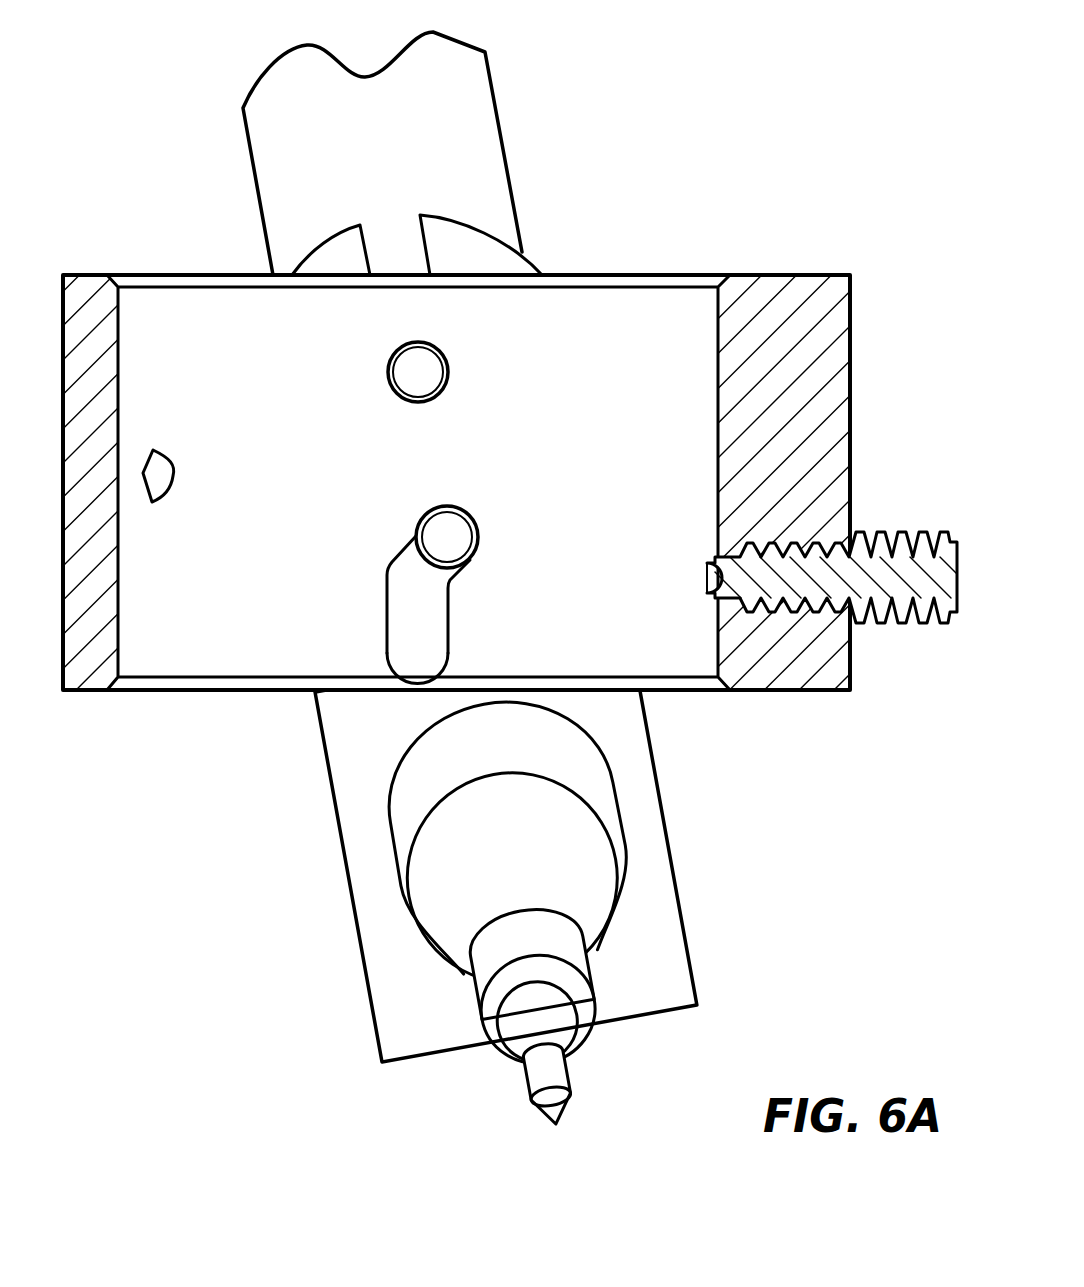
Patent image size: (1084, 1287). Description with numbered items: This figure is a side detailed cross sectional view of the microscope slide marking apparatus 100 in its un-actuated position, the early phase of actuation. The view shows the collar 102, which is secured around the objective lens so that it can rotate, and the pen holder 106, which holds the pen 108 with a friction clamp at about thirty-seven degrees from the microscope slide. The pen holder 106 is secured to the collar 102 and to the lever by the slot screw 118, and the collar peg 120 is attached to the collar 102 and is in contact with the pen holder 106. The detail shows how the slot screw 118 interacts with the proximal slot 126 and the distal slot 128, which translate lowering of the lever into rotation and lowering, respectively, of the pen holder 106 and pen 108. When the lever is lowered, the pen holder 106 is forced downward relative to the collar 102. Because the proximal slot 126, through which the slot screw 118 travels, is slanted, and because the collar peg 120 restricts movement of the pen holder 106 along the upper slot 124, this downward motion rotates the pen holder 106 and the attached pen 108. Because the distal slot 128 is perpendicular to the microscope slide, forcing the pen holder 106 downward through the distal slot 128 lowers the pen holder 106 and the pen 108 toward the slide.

The microscope slide marking apparatus 100 is at (510, 588).
The collar 102 is at (662, 275).
The pen holder 106 is at (653, 748).
The pen 108 is at (618, 835).
The slot screw 118 is at (415, 547).
The collar peg 120 is at (440, 340).
The upper slot 124 is at (390, 250).
The proximal slot 126 is at (369, 699).
The distal slot 128 is at (407, 667).